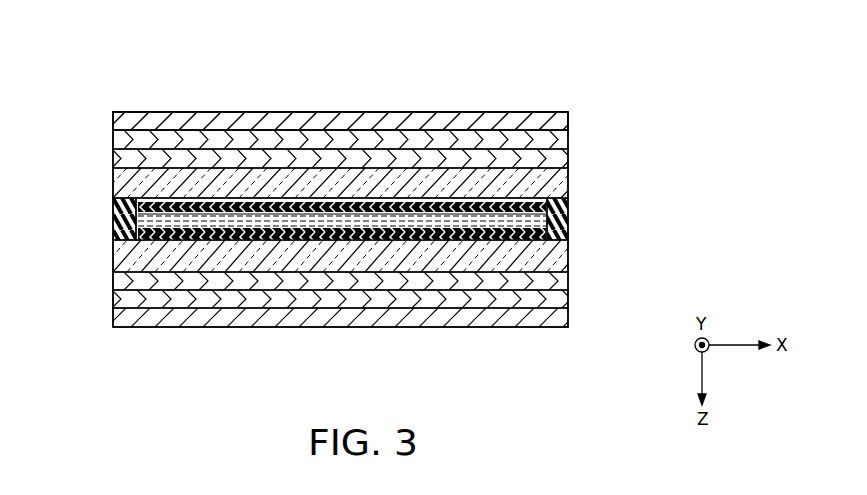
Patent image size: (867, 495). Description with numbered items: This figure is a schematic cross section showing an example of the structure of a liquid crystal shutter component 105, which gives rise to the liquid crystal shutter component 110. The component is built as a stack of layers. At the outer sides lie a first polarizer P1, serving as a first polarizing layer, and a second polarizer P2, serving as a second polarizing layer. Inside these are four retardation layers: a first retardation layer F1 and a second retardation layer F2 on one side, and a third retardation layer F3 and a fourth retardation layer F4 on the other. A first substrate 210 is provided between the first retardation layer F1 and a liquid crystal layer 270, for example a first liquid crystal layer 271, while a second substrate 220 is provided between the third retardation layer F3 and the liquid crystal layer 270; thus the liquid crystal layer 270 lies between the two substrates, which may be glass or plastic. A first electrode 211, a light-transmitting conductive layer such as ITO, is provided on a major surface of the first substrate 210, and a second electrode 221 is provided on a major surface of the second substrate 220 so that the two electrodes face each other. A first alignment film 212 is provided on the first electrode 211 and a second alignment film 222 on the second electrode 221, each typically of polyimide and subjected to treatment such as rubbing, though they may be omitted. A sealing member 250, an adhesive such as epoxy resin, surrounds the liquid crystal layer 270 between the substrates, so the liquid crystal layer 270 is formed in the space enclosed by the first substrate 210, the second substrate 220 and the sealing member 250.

The liquid crystal shutter component 105 is at (365, 191).
The liquid crystal shutter component 110 is at (365, 191).
The second polarizer P2 is at (560, 118).
The fourth retardation layer F4 is at (560, 137).
The third retardation layer F3 is at (560, 157).
The second substrate 220 is at (560, 181).
The liquid crystal layer 270 is at (418, 220).
The first liquid crystal layer 271 is at (418, 220).
The second alignment film 222 is at (324, 205).
The second electrode 221 is at (400, 200).
The first alignment film 212 is at (352, 238).
The first electrode 211 is at (430, 240).
The sealing member 250 is at (560, 233).
The first substrate 210 is at (560, 254).
The first retardation layer F1 is at (560, 280).
The second retardation layer F2 is at (560, 298).
The first polarizer P1 is at (560, 316).